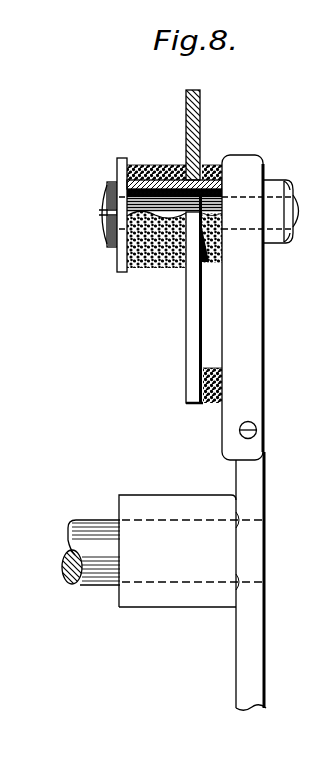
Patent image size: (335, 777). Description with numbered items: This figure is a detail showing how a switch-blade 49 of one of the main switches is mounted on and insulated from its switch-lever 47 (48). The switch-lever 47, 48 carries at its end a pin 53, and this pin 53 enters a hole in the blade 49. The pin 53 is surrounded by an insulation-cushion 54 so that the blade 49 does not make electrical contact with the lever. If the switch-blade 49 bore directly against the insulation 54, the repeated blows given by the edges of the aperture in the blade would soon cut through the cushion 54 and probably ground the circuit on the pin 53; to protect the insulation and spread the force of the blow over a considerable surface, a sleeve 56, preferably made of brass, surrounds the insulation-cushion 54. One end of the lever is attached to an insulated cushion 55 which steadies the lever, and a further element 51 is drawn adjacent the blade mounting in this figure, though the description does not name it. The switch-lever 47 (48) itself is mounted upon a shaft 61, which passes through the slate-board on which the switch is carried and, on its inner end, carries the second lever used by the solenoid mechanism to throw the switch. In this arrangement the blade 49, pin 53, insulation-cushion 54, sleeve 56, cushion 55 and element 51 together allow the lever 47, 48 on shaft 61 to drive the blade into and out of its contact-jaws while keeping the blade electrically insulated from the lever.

The switch-blade 49 is at (200, 102).
The friction washer 51 is at (147, 168).
The pin 53 is at (138, 169).
The insulation-cushion 54 is at (212, 177).
The insulated cushion 55 is at (214, 398).
The sleeve 56 is at (160, 178).
The shaft 61 is at (93, 545).
The switch-lever 47 is at (200, 581).
The switch-lever 48 is at (250, 640).